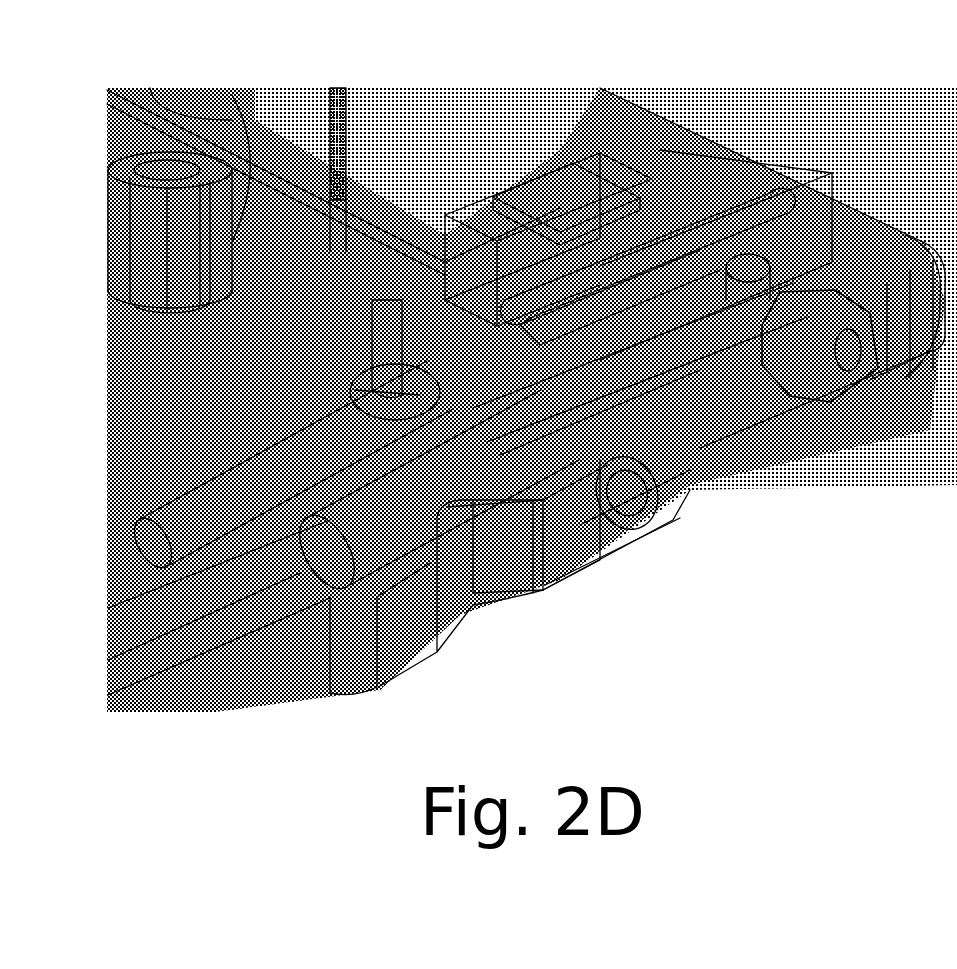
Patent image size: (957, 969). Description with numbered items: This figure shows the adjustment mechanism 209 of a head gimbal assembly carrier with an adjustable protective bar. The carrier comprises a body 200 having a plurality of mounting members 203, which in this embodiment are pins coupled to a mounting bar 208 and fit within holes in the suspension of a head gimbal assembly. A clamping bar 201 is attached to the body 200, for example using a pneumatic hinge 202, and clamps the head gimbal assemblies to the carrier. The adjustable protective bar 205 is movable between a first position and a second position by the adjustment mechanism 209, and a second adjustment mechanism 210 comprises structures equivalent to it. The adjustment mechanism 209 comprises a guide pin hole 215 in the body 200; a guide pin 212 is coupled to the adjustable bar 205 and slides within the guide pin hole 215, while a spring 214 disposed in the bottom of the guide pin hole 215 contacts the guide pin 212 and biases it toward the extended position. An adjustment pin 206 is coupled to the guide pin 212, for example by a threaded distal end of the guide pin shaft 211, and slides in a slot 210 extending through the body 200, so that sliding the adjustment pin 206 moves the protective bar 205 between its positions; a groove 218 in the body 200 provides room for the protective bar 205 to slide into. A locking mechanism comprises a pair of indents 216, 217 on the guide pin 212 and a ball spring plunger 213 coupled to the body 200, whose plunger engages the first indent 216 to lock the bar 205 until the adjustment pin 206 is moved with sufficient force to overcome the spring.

The body 200 is at (155, 396).
The clamping bar 201 is at (246, 98).
The pneumatic hinge 202 is at (252, 650).
The mounting members 203 is at (348, 102).
The adjustable protective bar 205 is at (718, 124).
The adjustment pin 206 is at (850, 372).
The mounting bar 208 is at (416, 178).
The adjustment mechanism 209 is at (596, 60).
The slot 210 is at (706, 390).
The guide pin shaft 211 is at (742, 278).
The guide pin 212 is at (646, 244).
The ball spring plunger 213 is at (583, 422).
The spring 214 is at (236, 474).
The guide pin hole 215 is at (170, 494).
The first indent 216 is at (436, 352).
The second indent 217 is at (556, 282).
The groove 218 is at (552, 170).